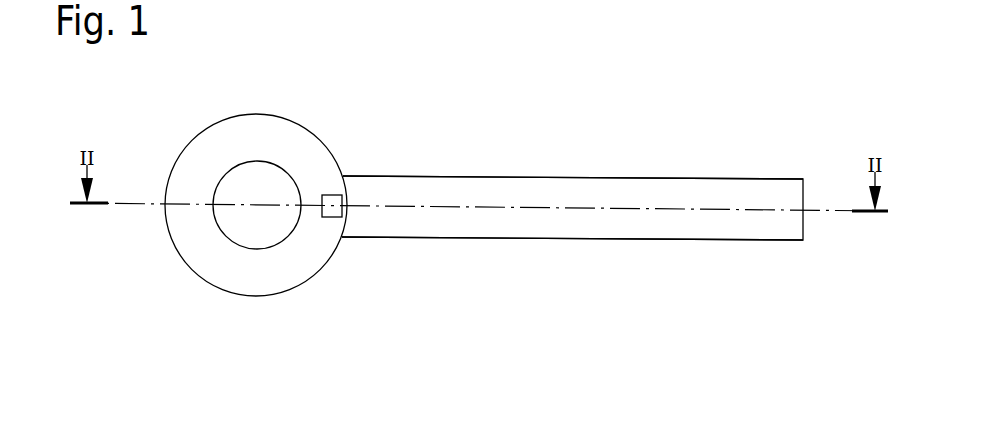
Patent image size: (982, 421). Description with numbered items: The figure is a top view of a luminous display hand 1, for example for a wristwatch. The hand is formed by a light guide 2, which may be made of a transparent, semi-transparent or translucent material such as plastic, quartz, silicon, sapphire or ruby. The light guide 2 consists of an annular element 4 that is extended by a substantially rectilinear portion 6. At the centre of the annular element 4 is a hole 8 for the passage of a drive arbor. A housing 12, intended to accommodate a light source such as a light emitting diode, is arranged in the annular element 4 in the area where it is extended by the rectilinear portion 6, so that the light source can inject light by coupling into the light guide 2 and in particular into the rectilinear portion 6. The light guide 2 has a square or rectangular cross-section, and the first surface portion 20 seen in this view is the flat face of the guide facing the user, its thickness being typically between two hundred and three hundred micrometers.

The luminous display hand 1 is at (593, 158).
The light guide 2 is at (644, 175).
The annular element 4 is at (207, 243).
The rectilinear portion 6 is at (760, 200).
The hole 8 is at (257, 199).
The housing 12 is at (334, 212).
The first surface portion 20 is at (590, 232).